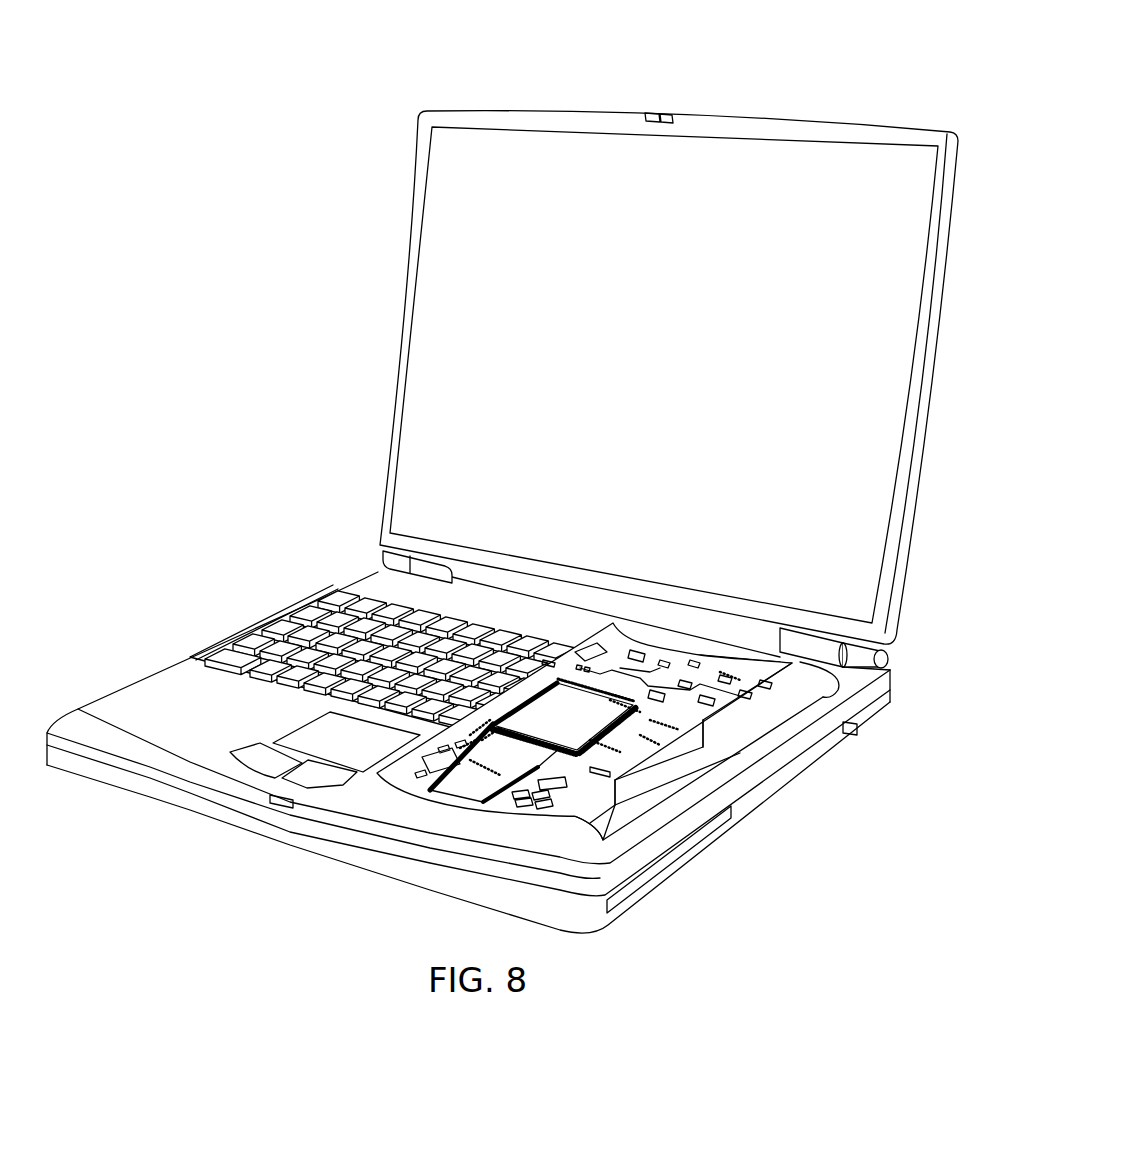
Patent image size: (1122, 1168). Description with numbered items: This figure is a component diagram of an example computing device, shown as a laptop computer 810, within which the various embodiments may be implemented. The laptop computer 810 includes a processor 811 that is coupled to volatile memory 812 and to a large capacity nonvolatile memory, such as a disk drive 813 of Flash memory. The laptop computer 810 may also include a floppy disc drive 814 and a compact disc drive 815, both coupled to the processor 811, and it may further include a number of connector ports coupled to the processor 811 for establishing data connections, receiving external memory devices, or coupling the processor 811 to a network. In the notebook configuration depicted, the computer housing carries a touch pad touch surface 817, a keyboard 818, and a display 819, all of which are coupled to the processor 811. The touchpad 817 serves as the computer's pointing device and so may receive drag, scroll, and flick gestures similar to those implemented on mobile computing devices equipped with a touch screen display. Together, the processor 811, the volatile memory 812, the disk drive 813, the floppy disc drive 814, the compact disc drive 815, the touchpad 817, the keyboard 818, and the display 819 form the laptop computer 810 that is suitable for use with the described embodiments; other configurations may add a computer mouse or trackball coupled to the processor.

The laptop computer 810 is at (468, 752).
The processor 811 is at (584, 731).
The volatile memory 812 is at (483, 777).
The disk drive 813 is at (620, 823).
The floppy disc drive 814 is at (700, 767).
The compact disc (CD) drive 815 is at (777, 703).
The touch pad touch surface 817 is at (302, 740).
The keyboard 818 is at (253, 643).
The display 819 is at (882, 572).